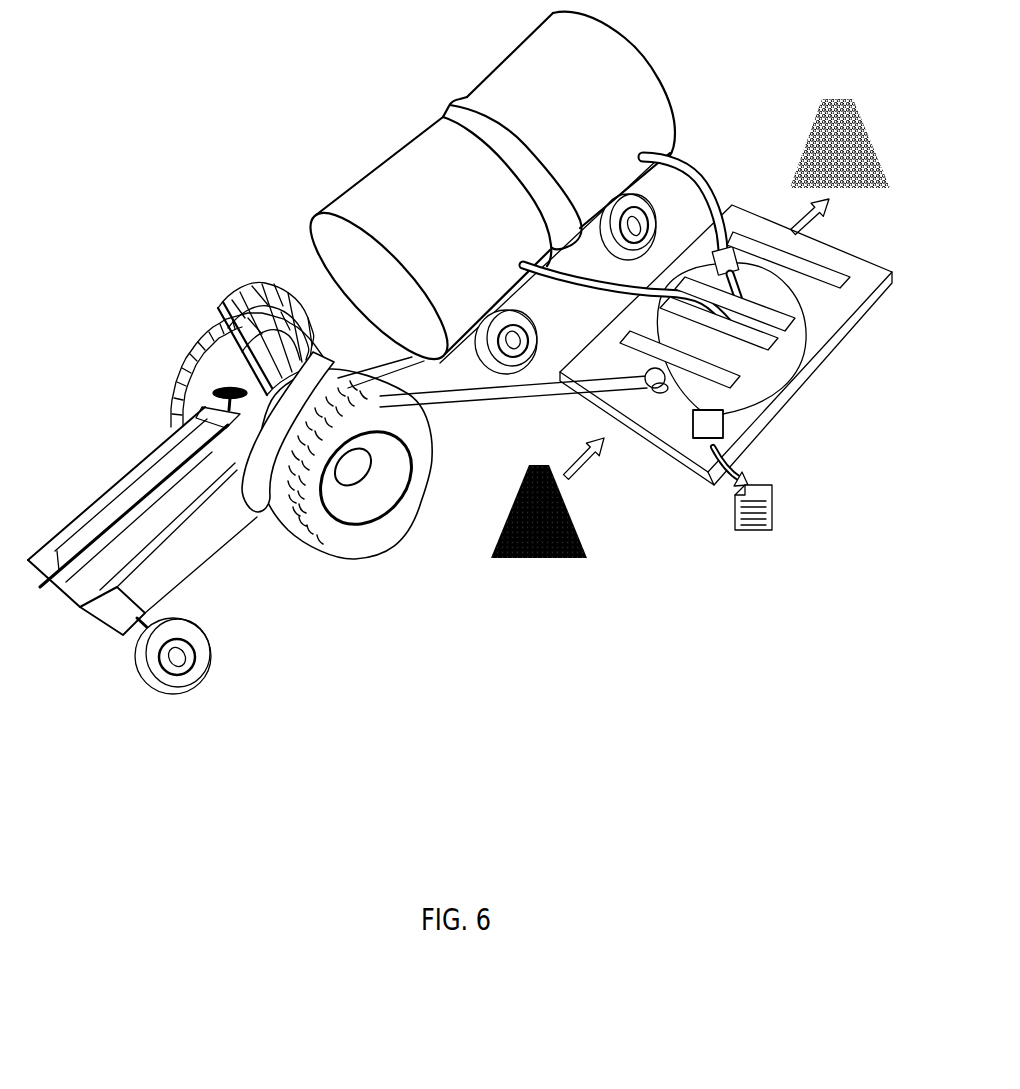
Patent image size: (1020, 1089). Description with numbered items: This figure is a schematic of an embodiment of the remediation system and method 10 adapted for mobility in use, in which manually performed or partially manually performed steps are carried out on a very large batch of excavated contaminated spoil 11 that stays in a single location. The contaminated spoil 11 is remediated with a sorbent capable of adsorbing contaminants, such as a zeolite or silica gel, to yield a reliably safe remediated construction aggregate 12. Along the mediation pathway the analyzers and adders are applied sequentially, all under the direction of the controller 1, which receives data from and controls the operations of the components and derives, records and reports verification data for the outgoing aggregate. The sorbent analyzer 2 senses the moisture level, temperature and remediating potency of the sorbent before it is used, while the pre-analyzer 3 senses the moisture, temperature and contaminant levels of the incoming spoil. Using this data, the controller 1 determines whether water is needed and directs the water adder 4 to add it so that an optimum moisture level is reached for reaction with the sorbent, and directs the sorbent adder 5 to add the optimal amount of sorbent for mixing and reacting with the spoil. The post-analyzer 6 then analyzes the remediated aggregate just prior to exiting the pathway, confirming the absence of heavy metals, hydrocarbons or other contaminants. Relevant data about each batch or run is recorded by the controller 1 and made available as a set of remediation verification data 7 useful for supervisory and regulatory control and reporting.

The controller 1 is at (693, 427).
The sorbent analyzer 2 is at (733, 262).
The pre-analyzer 3 is at (720, 381).
The water adder 4 is at (748, 337).
The sorbent adder 5 is at (788, 317).
The post-analyzer 6 is at (807, 268).
The remediation verification data 7 is at (771, 486).
The system and method 10 is at (766, 659).
The contaminated spoil 11 is at (592, 518).
The remediated construction aggregate 12 is at (846, 88).